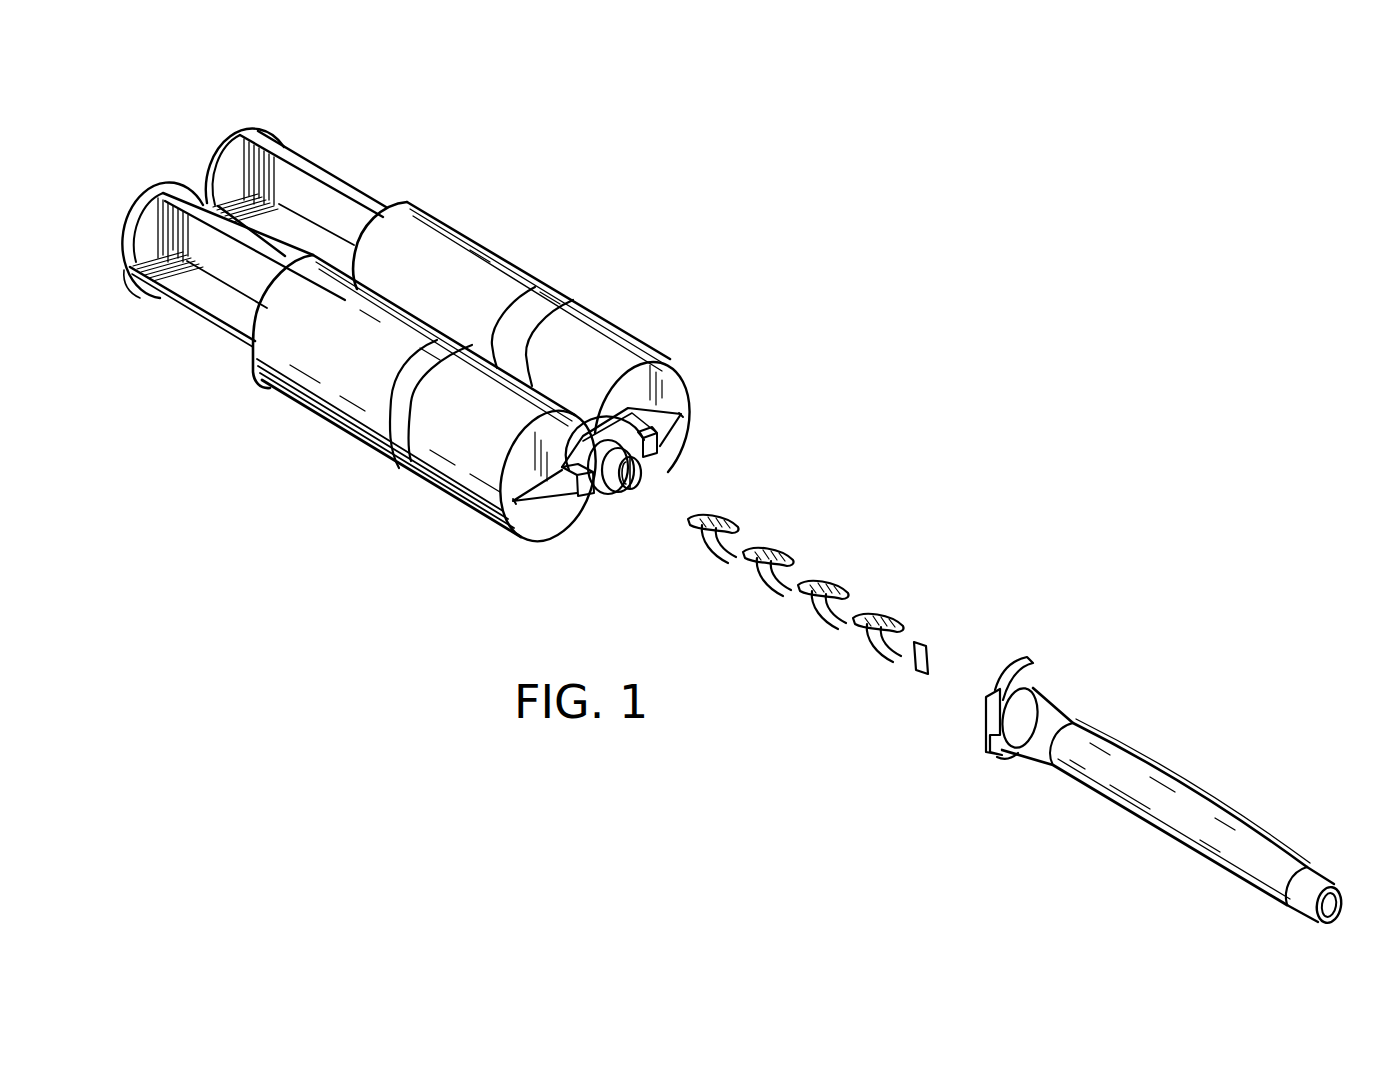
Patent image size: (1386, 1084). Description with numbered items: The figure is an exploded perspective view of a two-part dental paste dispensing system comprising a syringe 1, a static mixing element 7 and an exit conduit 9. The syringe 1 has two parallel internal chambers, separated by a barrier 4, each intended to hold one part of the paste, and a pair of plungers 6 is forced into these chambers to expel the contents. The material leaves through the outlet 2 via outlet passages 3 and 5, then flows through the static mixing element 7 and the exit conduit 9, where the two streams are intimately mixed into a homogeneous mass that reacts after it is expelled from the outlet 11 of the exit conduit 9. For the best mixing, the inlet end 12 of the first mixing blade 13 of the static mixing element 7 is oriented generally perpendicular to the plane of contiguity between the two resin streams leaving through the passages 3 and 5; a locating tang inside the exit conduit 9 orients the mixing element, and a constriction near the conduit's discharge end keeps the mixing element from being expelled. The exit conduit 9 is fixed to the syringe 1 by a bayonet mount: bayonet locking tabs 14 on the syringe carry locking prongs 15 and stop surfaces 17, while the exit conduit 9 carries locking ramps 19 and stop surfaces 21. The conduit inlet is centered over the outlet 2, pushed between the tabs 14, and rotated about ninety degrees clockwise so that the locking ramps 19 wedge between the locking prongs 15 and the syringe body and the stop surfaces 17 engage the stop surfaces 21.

The syringe 1 is at (558, 257).
The outlet 2 is at (600, 482).
The outlet passage 3 is at (636, 471).
The barrier 4 is at (623, 476).
The outlet passage 5 is at (614, 474).
The plungers 6 is at (243, 213).
The static mixing element 7 is at (786, 590).
The exit conduit 9 is at (1169, 781).
The outlet of exit conduit 11 is at (1333, 907).
The inlet end of first mixing blade 12 is at (695, 524).
The first mixing blade 13 is at (710, 542).
The bayonet locking tabs 14 is at (684, 453).
The locking prongs 15 is at (658, 447).
The stop surfaces 17 is at (656, 400).
The locking ramps 19 is at (1027, 673).
The stop surfaces 21 is at (995, 688).